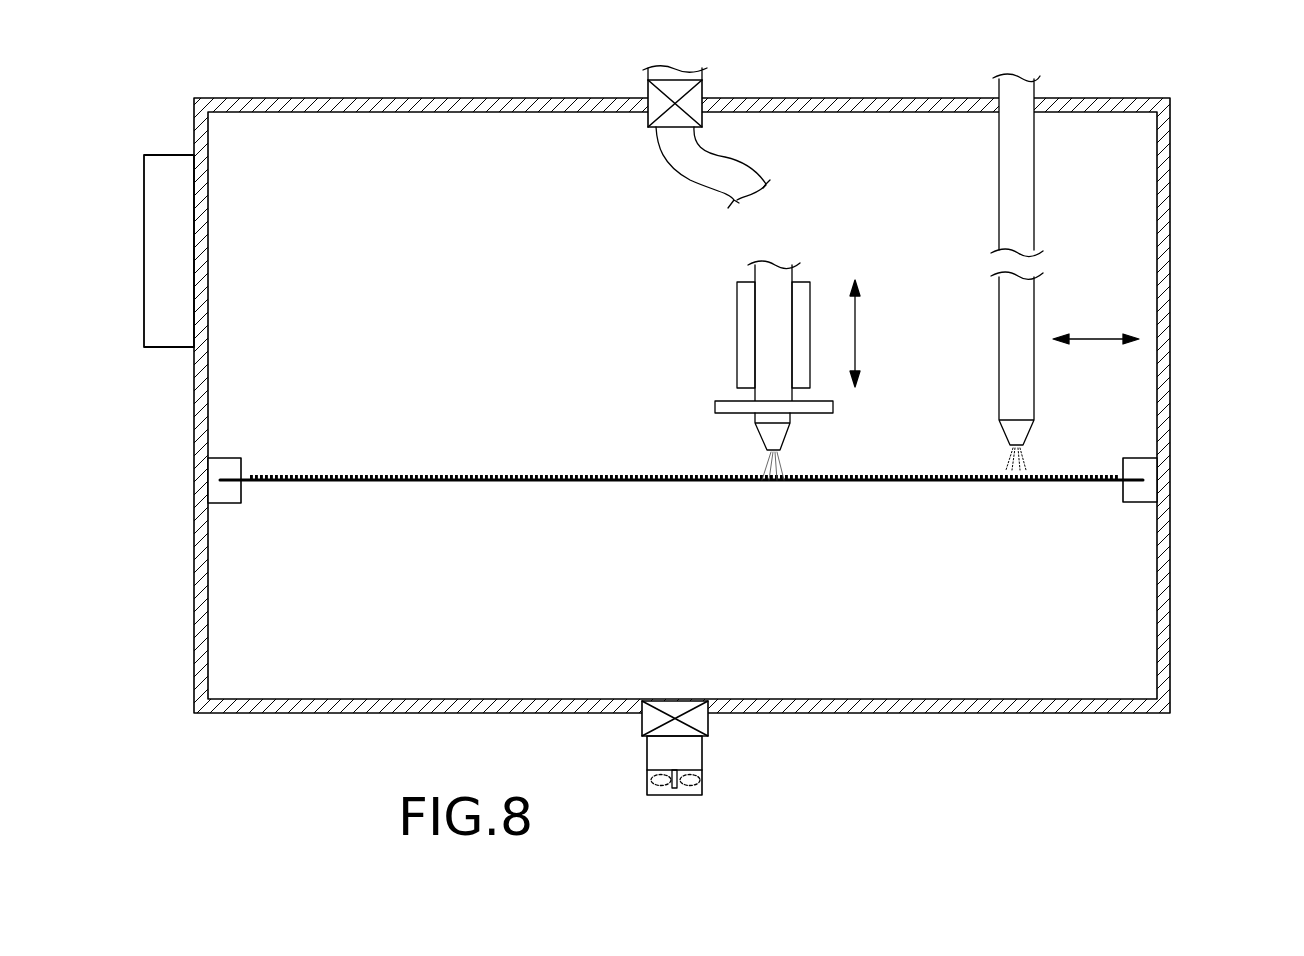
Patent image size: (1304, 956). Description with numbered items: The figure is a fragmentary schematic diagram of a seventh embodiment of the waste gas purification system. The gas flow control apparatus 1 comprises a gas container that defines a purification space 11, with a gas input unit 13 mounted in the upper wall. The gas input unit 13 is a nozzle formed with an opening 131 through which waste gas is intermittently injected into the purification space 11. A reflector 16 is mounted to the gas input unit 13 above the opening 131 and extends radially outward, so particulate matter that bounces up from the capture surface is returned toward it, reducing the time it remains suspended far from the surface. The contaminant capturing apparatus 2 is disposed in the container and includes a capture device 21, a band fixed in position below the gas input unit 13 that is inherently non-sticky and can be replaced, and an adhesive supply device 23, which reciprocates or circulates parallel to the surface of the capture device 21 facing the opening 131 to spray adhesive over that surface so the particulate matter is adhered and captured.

The gas flow control apparatus 1 is at (577, 78).
The purification space 11 is at (1120, 207).
The gas input unit 13 is at (782, 376).
The opening 131 is at (777, 442).
The reflector 16 is at (725, 402).
The contaminant capturing apparatus 2 is at (268, 502).
The capture device 21 is at (722, 480).
The adhesive supply device 23 is at (1020, 382).